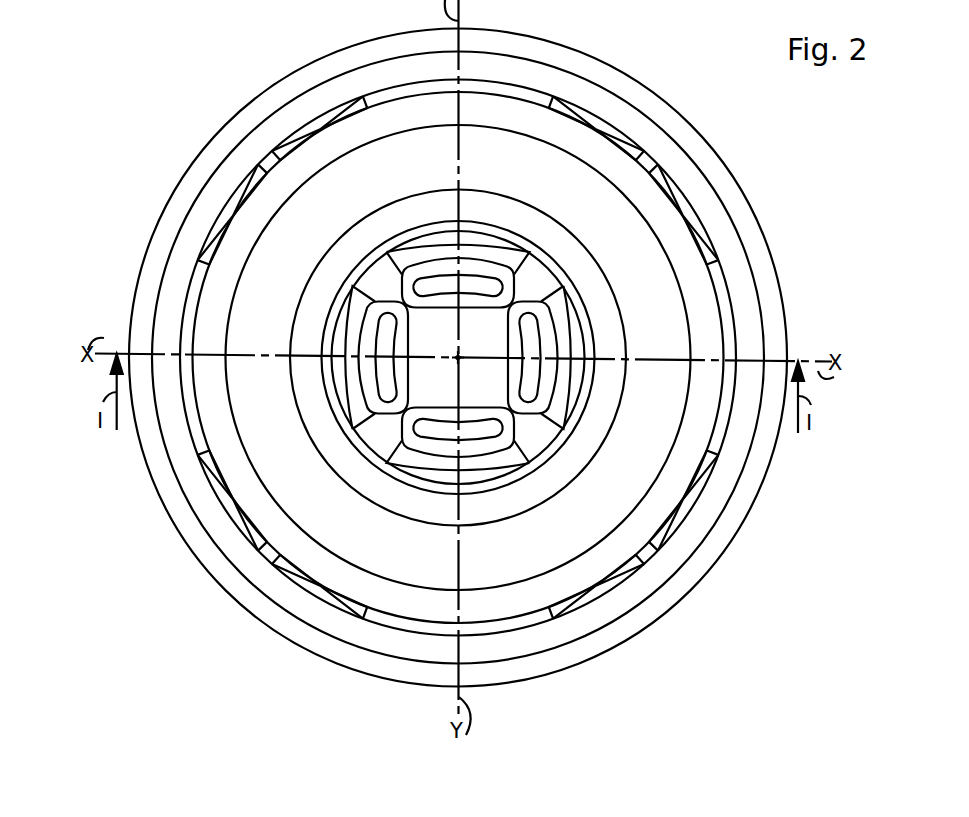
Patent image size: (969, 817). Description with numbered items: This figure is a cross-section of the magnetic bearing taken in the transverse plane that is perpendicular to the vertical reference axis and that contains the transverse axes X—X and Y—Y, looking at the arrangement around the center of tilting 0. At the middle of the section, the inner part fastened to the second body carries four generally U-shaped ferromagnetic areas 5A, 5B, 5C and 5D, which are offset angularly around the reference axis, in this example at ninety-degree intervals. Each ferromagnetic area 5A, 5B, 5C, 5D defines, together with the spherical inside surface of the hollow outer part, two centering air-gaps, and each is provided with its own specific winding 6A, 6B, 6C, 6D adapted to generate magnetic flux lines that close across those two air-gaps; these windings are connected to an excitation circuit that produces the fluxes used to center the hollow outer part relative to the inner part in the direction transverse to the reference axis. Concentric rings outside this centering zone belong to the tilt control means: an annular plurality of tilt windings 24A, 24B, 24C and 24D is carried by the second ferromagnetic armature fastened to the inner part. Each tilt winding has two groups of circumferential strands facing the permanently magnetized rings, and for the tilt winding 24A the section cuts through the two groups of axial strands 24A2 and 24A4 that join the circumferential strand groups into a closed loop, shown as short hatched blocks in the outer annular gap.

The tilt winding 24A is at (183, 438).
The tilt winding 24B is at (775, 274).
The tilt winding 24C is at (576, 105).
The tilt winding 24D is at (600, 608).
The group of axial strands 24A2 is at (207, 228).
The group of axial strands 24A4 is at (249, 541).
The U-shaped ferromagnetic area 5A is at (348, 312).
The U-shaped ferromagnetic area 5B is at (572, 406).
The U-shaped ferromagnetic area 5C is at (494, 246).
The U-shaped ferromagnetic area 5D is at (408, 468).
The winding 6A is at (360, 400).
The winding 6B is at (551, 311).
The winding 6C is at (414, 265).
The winding 6D is at (483, 468).
The center of tilting 0 is at (460, 356).